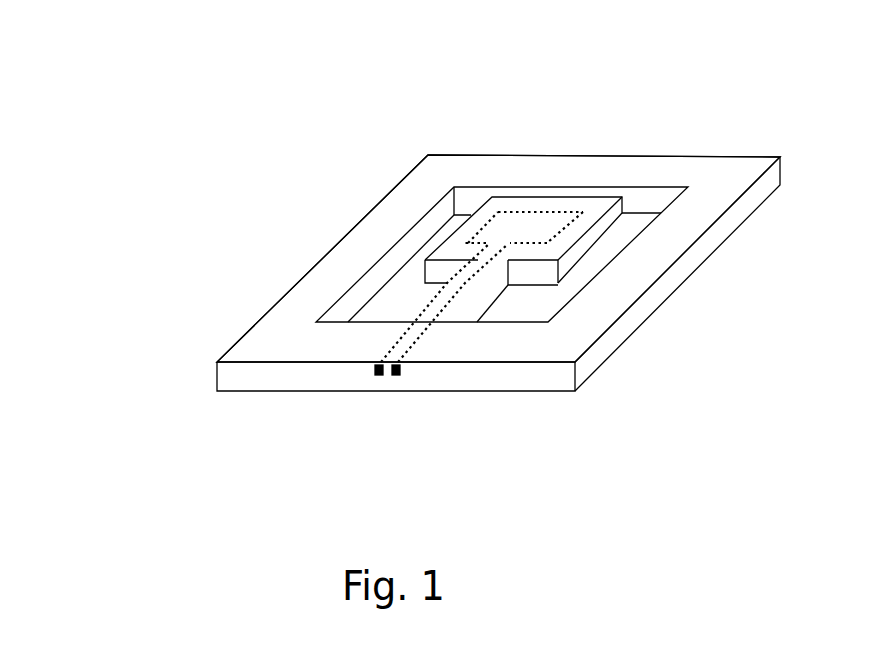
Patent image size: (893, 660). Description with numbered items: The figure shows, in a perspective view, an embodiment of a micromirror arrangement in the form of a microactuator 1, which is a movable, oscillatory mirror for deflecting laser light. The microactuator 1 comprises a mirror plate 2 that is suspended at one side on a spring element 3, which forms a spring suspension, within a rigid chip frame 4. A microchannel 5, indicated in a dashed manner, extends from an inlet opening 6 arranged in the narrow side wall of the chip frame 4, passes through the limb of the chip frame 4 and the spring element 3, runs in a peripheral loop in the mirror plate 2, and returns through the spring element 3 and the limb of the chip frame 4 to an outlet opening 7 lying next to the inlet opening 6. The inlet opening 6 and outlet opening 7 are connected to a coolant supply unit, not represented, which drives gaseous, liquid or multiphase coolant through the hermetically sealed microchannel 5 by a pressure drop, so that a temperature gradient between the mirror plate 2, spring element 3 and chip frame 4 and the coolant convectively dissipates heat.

The microactuator 1 is at (233, 368).
The mirror plate 2 is at (458, 235).
The spring element 3 is at (467, 312).
The chip frame 4 is at (600, 315).
The microchannel 5 is at (517, 212).
The inlet opening 6 is at (400, 375).
The outlet opening 7 is at (375, 377).